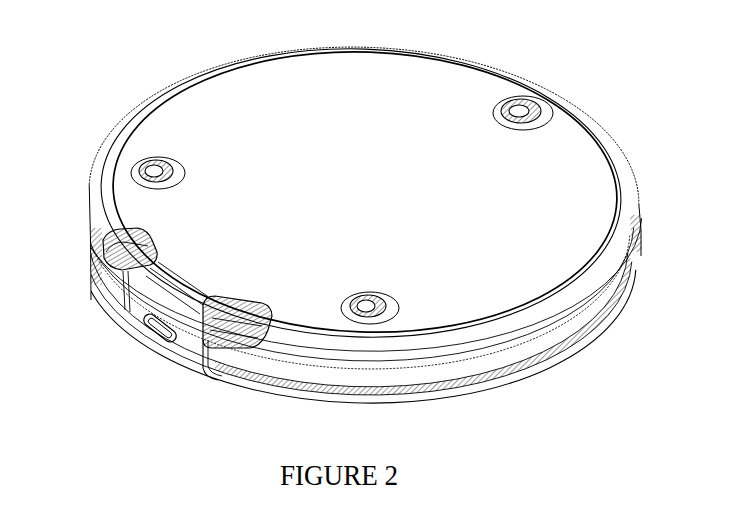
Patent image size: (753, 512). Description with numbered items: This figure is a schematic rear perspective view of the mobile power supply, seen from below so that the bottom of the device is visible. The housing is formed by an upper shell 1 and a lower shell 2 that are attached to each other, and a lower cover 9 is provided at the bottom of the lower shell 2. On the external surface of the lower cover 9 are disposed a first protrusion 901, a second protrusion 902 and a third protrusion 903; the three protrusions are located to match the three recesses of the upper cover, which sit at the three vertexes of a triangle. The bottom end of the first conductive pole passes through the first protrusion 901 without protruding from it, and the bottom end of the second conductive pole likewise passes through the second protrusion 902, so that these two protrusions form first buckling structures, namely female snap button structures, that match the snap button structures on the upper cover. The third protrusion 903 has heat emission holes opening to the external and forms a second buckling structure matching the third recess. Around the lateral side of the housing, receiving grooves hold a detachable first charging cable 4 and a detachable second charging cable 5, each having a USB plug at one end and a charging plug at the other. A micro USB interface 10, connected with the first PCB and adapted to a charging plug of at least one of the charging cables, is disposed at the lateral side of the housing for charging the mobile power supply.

The lower cover 9 is at (437, 67).
The first protrusion 901 is at (182, 163).
The second protrusion 902 is at (386, 296).
The third protrusion 903 is at (548, 108).
The upper shell 1 is at (132, 317).
The lower shell 2 is at (160, 310).
The first charging cable 4 is at (260, 373).
The second charging cable 5 is at (103, 268).
The micro USB interface 10 is at (155, 338).